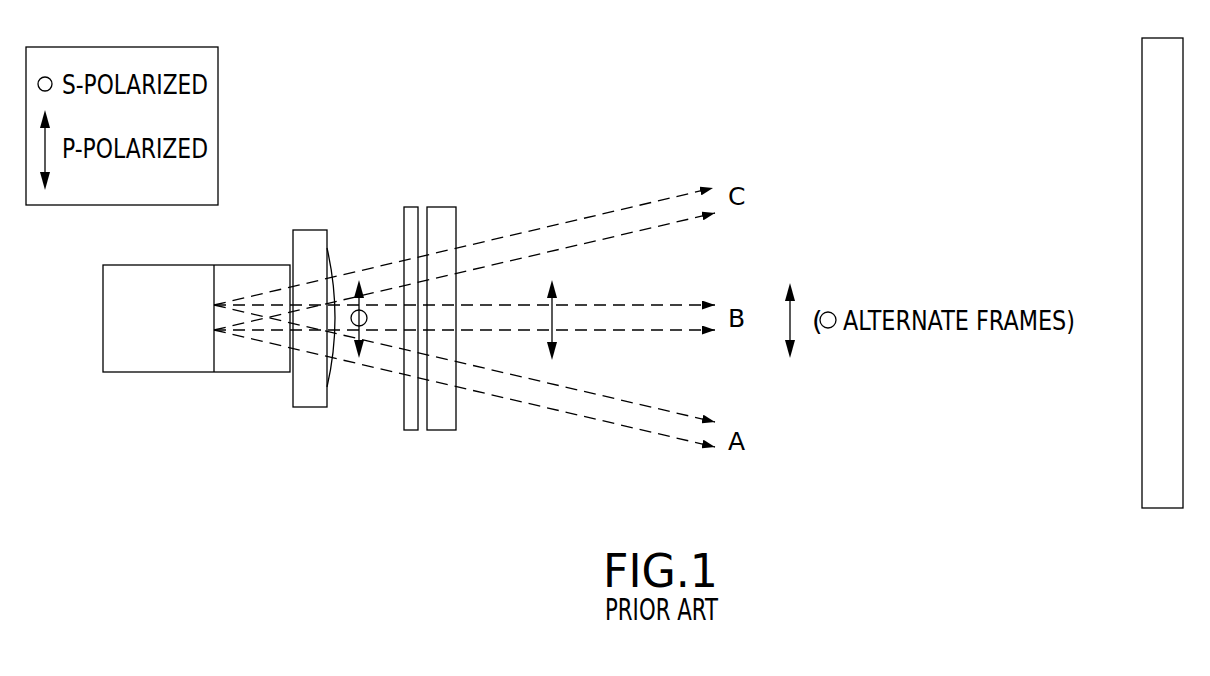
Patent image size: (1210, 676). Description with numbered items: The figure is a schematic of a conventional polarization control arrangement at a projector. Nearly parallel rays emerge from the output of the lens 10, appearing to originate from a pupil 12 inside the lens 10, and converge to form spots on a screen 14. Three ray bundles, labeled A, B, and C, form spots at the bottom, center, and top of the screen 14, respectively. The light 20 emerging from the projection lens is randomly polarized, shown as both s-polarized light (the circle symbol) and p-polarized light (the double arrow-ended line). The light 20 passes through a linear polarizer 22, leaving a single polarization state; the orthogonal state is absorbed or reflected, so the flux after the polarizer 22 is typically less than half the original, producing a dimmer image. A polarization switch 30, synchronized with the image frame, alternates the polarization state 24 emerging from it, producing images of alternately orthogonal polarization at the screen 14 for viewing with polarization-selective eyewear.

The lens 10 is at (330, 383).
The pupil 12 is at (218, 330).
The screen 14 is at (1142, 85).
The light 20 is at (367, 320).
The linear polarizer 22 is at (410, 207).
The polarization state 24 is at (552, 315).
The polarization switch 30 is at (450, 431).